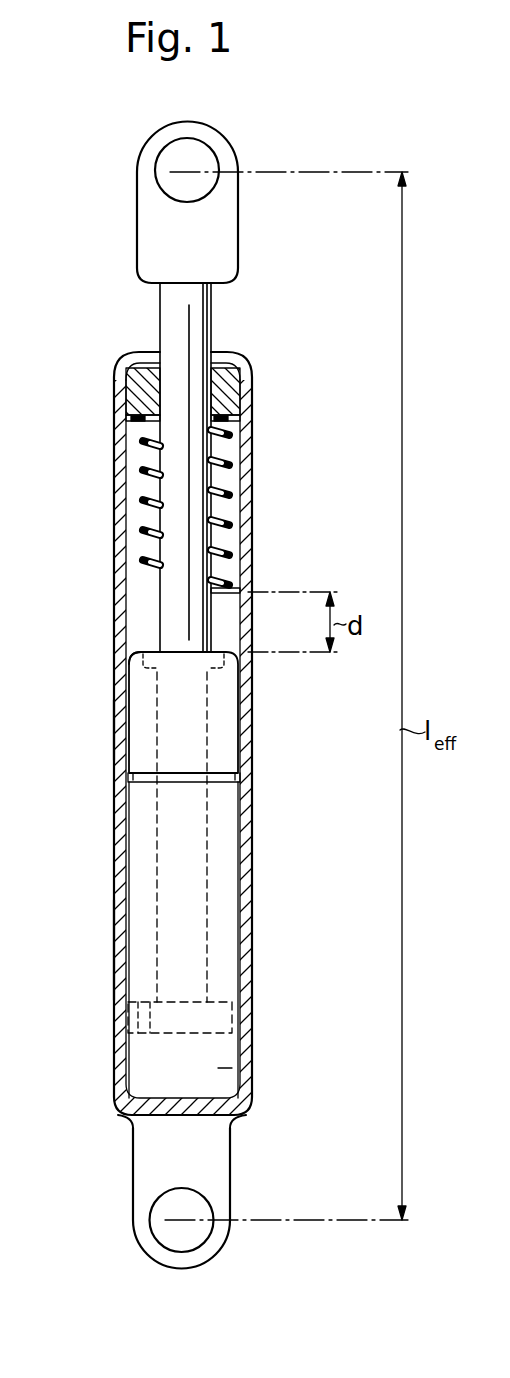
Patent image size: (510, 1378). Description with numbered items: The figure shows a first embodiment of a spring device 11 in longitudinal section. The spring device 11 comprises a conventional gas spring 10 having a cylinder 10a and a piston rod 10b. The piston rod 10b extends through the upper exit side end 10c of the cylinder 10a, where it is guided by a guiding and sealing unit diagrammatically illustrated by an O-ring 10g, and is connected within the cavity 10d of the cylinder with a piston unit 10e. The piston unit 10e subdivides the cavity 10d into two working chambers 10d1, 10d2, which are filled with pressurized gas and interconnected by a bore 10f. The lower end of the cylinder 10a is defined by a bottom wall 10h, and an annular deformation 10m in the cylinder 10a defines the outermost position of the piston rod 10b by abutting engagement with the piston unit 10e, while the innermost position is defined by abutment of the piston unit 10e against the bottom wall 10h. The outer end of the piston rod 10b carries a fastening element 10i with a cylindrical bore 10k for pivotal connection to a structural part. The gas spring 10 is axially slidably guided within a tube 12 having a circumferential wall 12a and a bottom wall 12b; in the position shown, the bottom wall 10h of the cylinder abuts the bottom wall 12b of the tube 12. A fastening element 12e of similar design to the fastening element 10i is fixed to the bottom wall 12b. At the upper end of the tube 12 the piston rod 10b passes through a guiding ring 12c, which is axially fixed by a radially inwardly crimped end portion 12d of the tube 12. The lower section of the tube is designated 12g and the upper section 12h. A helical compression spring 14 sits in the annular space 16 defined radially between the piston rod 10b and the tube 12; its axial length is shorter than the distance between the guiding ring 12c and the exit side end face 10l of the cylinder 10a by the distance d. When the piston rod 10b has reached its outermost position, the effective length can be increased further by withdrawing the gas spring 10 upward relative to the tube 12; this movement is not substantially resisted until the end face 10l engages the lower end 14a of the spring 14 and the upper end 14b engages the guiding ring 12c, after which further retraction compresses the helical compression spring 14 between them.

The gas spring 10 is at (230, 856).
The cylinder 10a is at (220, 715).
The piston rod 10b is at (165, 595).
The exit side end 10c is at (138, 665).
The cavity 10d is at (222, 906).
The working chamber 10d1 is at (225, 957).
The working chamber 10d2 is at (232, 1068).
The piston unit 10e is at (236, 1020).
The bore 10f is at (142, 1022).
The O-ring 10g is at (140, 655).
The bottom wall 10h is at (229, 1128).
The fastening element 10i is at (155, 232).
The cylindrical bore 10k is at (178, 160).
The exit side end face 10l is at (236, 652).
The annular deformation 10m is at (135, 786).
The spring device 11 is at (108, 723).
The tube 12 is at (242, 775).
The circumferential wall 12a is at (246, 530).
The bottom wall 12b is at (134, 1128).
The guiding ring 12c is at (242, 392).
The radially inwardly crimped end portion 12d is at (231, 356).
The fastening element 12e is at (150, 1163).
The lower section 12g is at (118, 970).
The upper section 12h is at (122, 492).
The helical compression spring 14 is at (232, 488).
The lower end 14a is at (240, 580).
The upper end 14b is at (135, 425).
The annular space 16 is at (232, 440).